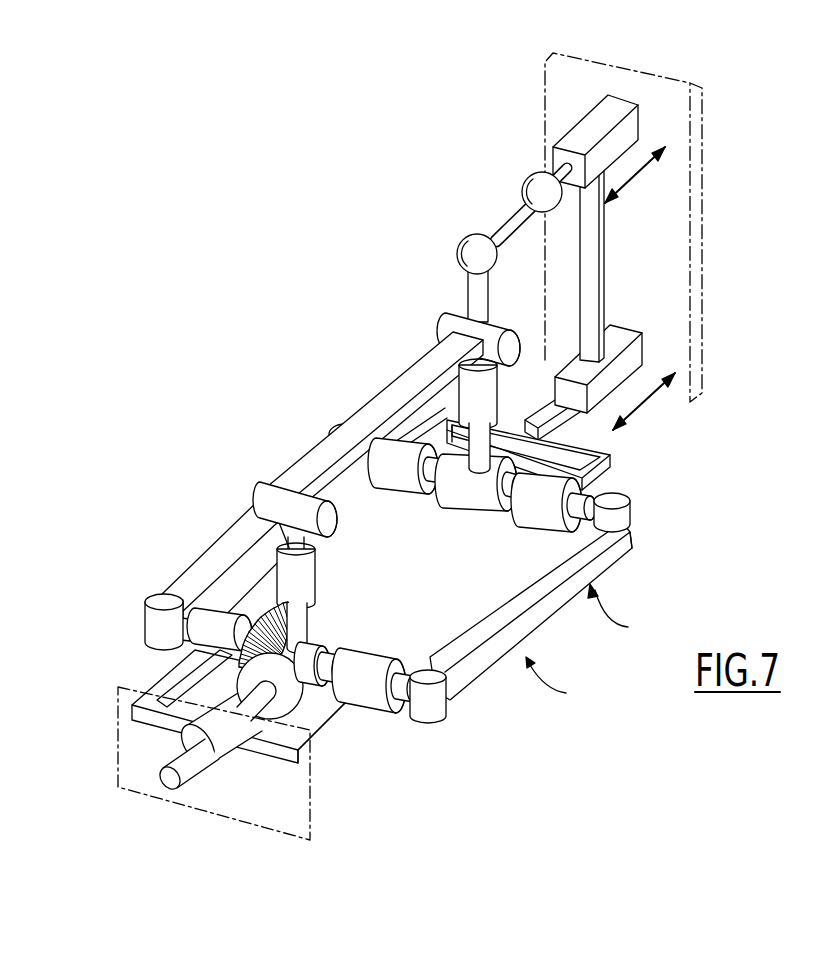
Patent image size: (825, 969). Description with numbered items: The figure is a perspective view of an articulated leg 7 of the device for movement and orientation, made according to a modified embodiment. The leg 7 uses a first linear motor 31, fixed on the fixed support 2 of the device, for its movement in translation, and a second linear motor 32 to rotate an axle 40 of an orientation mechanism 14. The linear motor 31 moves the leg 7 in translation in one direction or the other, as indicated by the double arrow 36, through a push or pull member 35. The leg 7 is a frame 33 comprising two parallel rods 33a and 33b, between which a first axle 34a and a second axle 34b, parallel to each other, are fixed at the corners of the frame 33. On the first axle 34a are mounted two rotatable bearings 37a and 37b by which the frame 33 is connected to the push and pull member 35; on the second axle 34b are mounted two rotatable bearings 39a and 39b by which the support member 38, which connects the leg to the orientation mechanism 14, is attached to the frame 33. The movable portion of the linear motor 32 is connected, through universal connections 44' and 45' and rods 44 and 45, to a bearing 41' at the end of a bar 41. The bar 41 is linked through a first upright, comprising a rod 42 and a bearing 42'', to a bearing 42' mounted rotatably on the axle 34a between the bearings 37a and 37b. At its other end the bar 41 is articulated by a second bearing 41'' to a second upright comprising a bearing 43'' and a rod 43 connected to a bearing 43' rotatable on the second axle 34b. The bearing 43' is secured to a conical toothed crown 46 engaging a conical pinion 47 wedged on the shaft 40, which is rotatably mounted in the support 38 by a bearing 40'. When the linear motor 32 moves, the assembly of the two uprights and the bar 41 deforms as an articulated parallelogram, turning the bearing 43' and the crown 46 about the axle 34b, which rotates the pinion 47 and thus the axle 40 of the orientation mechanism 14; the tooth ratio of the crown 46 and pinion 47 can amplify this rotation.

The fixed support 2 is at (713, 193).
The articulated leg 7 is at (614, 614).
The orientation mechanism 14 is at (214, 763).
The first linear motor 31 is at (637, 350).
The second linear motor 32 is at (635, 123).
The frame 33 is at (557, 681).
The parallel rod 33a is at (578, 552).
The parallel rod 33b is at (218, 553).
The first axle 34a is at (597, 488).
The second axle 34b is at (402, 693).
The push or pull member 35 is at (523, 420).
The double arrow 36 is at (646, 403).
The rotatable bearing 37a is at (537, 518).
The rotatable bearing 37b is at (407, 472).
The support member 38 is at (323, 720).
The rotatable bearing 39a is at (378, 665).
The rotatable bearing 39b is at (217, 623).
The axle 40 is at (187, 788).
The bearing 40' is at (218, 746).
The bar 41 is at (375, 420).
The bearing 41' is at (487, 327).
The second bearing 41'' is at (270, 501).
The rod 42 is at (463, 495).
The bearing 42' is at (487, 511).
The bearing 42'' is at (503, 416).
The rod 43 is at (324, 617).
The bearing 43' is at (330, 649).
The bearing 43'' is at (324, 573).
The rod 44 is at (512, 204).
The universal connection 44' is at (521, 180).
The rod 45 is at (449, 296).
The universal connection 45' is at (459, 240).
The conical toothed crown 46 is at (210, 652).
The conical pinion 47 is at (243, 680).